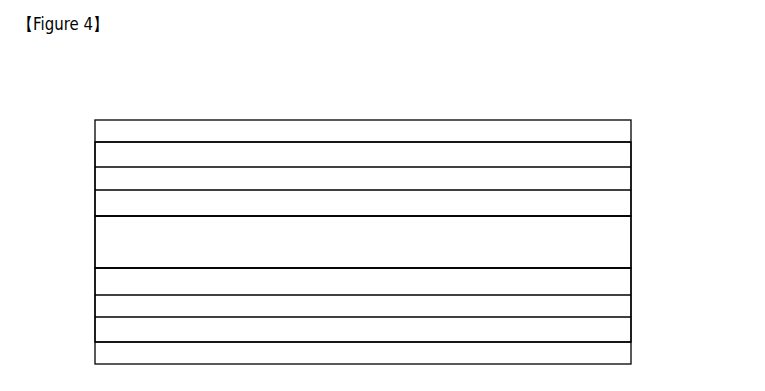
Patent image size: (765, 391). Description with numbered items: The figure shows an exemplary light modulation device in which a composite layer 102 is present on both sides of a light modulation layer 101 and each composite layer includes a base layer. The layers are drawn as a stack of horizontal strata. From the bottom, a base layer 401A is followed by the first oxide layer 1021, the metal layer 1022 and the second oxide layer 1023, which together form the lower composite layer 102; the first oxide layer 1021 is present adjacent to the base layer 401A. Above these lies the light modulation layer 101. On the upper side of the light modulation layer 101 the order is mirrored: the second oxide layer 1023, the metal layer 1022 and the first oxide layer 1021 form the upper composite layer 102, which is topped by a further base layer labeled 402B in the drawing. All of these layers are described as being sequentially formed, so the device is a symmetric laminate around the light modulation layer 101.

The second protective film 402B is at (622, 129).
The first oxide layer 1021 is at (620, 154).
The metal layer 1022 is at (620, 179).
The second oxide layer 1023 is at (620, 202).
The light modulation layer 101 is at (93, 216).
The composite layer 102 is at (93, 142).
The base layer 401A is at (618, 352).